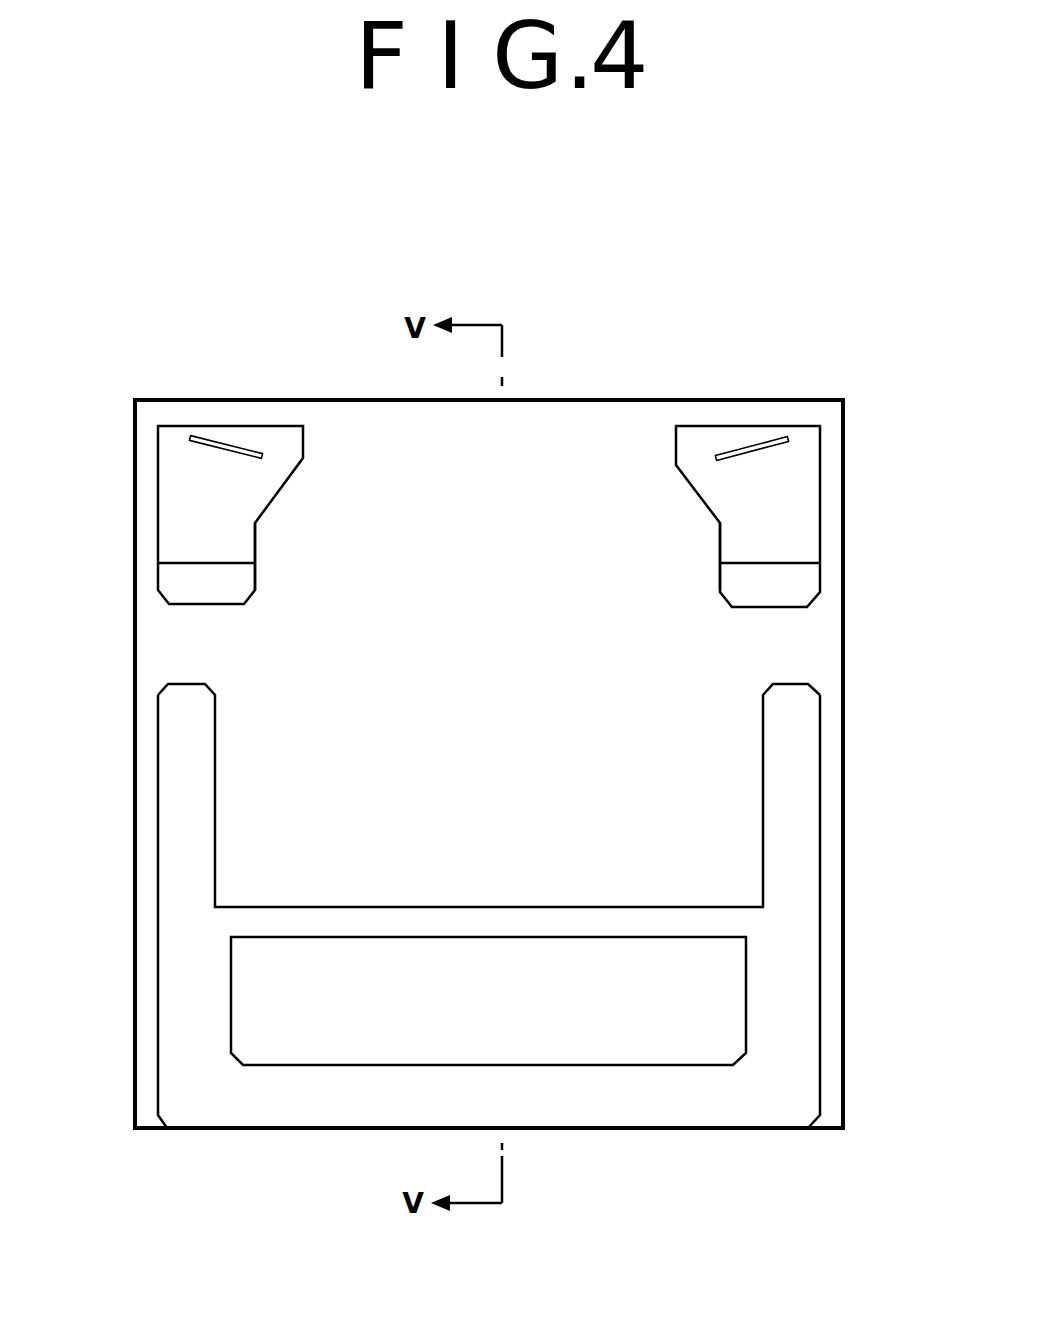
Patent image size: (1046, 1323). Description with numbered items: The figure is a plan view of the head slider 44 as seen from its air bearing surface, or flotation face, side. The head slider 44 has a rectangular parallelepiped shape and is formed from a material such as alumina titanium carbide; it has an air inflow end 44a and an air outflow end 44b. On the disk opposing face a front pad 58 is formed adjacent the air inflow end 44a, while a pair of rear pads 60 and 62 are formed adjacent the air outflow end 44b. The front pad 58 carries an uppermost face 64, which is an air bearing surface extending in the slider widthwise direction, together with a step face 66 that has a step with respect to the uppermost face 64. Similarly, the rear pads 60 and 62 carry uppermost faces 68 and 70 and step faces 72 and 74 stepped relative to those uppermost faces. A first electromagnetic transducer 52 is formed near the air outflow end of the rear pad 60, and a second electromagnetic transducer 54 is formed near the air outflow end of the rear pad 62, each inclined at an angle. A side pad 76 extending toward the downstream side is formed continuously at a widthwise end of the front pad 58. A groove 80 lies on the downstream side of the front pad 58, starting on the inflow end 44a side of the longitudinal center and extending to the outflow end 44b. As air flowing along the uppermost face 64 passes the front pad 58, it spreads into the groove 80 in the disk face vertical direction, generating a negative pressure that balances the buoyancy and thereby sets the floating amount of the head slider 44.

The head slider 44 is at (662, 360).
The air inflow end 44a is at (723, 1128).
The air outflow end 44b is at (579, 400).
The first electromagnetic transducer 52 is at (740, 443).
The second electromagnetic transducer 54 is at (233, 445).
The front pad 58 is at (818, 998).
The rear pad 60 is at (822, 507).
The rear pad 62 is at (157, 503).
The uppermost face 64 is at (568, 1045).
The step face 66 is at (215, 1103).
The uppermost face 68 is at (737, 542).
The uppermost face 70 is at (237, 540).
The step face 72 is at (773, 578).
The step face 74 is at (200, 577).
The side pad 76 is at (793, 828).
The groove 80 is at (527, 743).